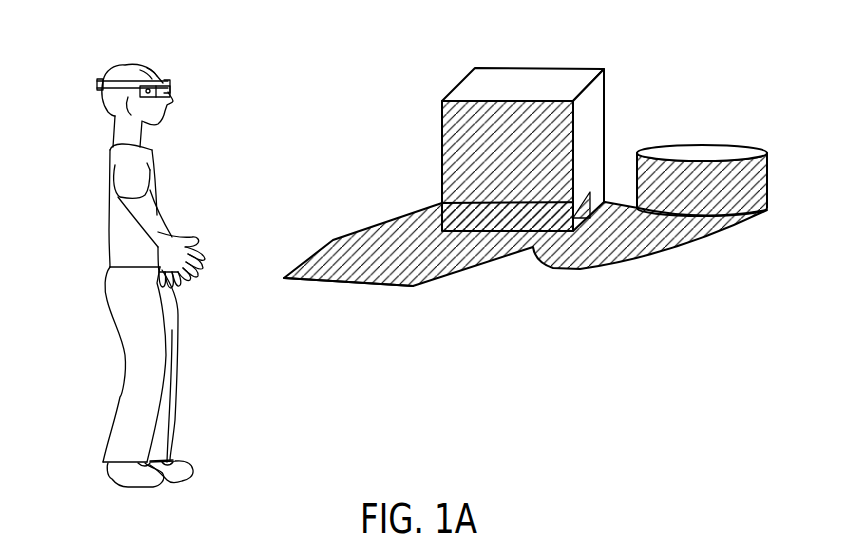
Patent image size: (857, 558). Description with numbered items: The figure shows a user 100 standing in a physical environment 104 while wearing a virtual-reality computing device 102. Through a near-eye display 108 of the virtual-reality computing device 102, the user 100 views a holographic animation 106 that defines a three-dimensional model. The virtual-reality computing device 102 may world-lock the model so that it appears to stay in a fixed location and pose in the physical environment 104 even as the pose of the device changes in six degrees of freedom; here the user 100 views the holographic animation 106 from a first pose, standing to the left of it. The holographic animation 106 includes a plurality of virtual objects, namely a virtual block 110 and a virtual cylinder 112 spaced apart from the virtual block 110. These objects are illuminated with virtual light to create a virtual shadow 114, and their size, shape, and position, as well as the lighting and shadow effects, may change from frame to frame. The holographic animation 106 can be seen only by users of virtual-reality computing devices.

The user 100 is at (108, 230).
The virtual-reality computing device 102 is at (98, 82).
The physical environment 104 is at (708, 62).
The holographic animation 106 is at (672, 266).
The near-eye display 108 is at (170, 93).
The virtual block 110 is at (462, 82).
The virtual cylinder 112 is at (737, 154).
The virtual shadow 114 is at (418, 278).